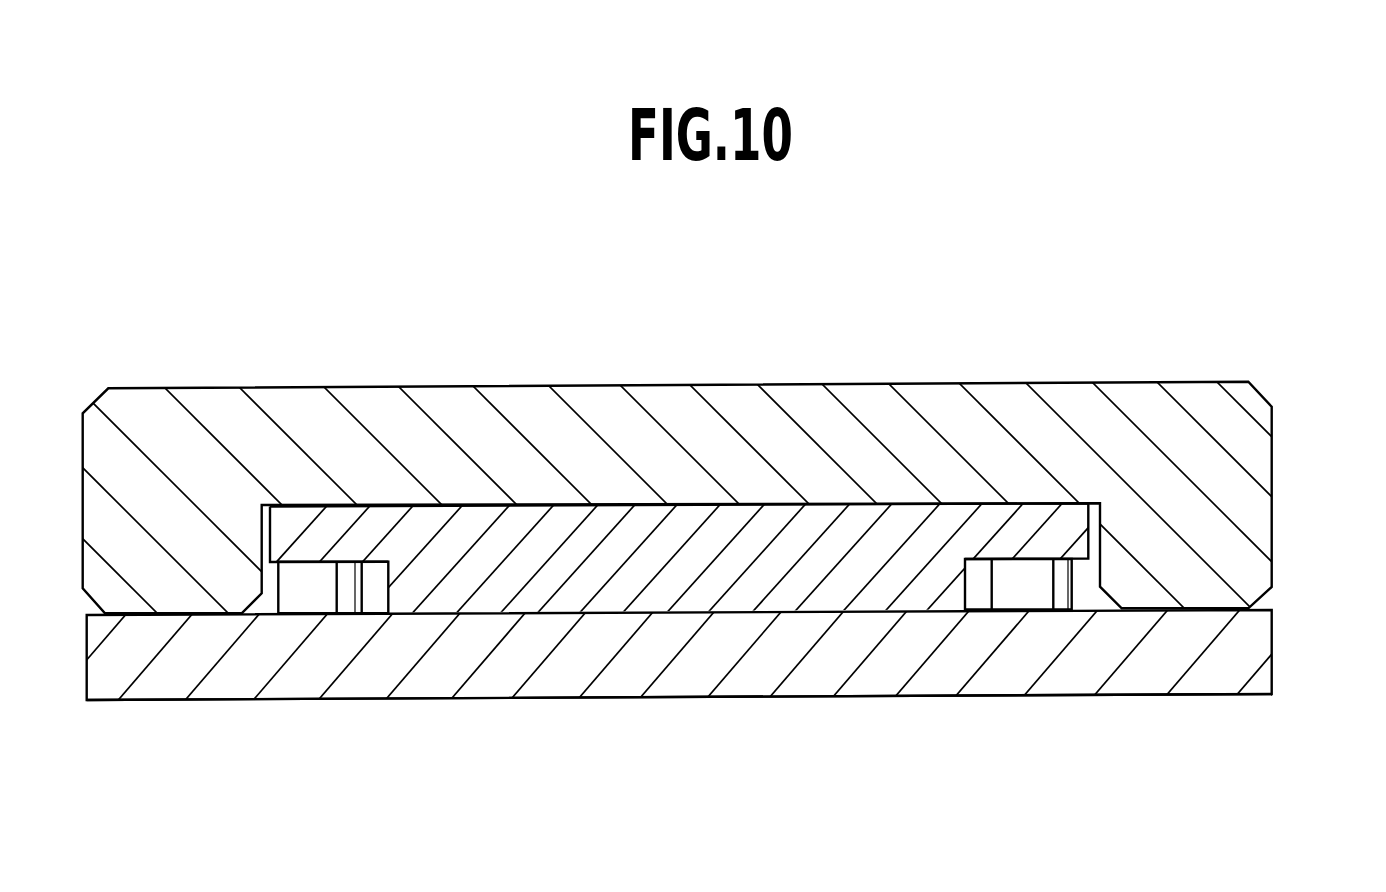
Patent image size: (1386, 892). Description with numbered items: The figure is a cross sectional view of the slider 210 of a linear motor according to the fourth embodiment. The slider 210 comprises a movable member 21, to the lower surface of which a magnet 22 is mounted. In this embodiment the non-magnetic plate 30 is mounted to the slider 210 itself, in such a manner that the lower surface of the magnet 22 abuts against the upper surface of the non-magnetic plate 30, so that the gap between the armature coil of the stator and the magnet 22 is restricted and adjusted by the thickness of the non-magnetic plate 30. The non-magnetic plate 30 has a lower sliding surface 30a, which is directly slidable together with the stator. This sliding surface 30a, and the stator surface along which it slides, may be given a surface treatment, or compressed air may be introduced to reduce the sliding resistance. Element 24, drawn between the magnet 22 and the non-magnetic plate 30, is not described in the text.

The slider 210 is at (1269, 350).
The movable member 21 is at (1223, 503).
The magnet 22 is at (1056, 518).
The connecting element 24 is at (1024, 578).
The non-magnetic plate 30 is at (1255, 658).
The lower sliding surface 30a is at (1197, 698).